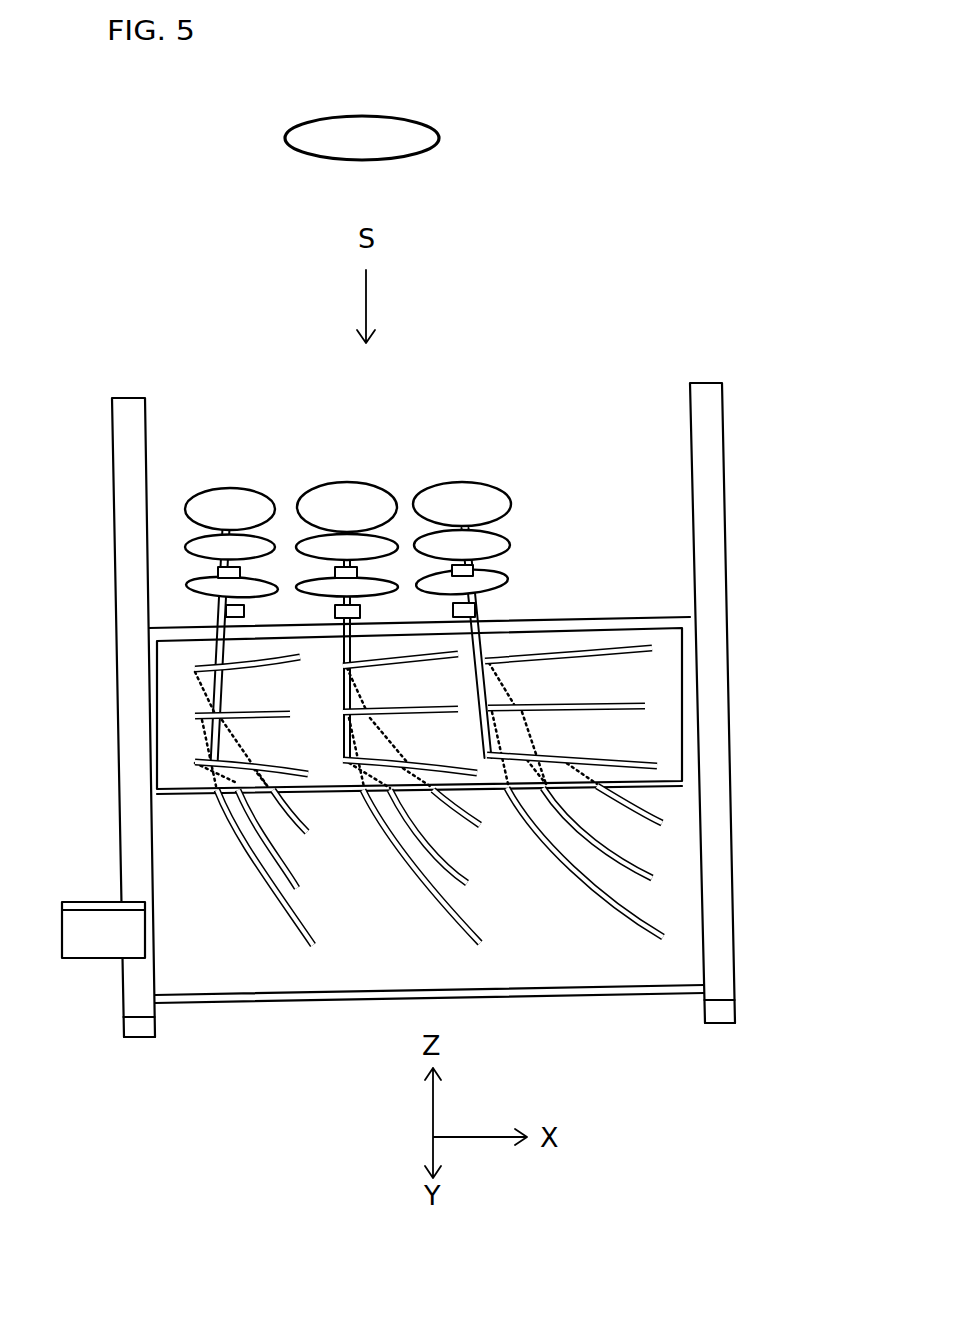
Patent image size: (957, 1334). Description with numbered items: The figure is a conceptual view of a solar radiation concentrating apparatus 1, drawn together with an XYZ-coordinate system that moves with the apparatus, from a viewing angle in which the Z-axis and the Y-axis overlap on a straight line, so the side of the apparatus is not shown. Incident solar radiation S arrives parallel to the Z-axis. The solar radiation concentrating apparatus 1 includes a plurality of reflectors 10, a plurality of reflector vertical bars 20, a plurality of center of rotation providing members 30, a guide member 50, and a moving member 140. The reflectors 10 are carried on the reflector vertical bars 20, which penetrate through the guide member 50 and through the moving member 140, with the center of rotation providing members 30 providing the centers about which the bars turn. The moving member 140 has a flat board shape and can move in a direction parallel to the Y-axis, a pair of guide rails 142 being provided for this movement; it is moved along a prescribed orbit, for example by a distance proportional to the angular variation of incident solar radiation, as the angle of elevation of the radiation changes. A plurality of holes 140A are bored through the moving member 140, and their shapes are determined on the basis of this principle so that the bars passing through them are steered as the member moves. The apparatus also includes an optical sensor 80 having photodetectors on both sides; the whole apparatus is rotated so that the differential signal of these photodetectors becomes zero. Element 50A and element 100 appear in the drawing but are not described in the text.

The solar radiation concentrating apparatus 1 is at (525, 447).
The reflector 10 is at (231, 480).
The reflector vertical bar 20 is at (208, 596).
The center of rotation providing member 30 is at (480, 608).
The guide member 50 is at (490, 701).
The rod 50A is at (663, 652).
The optical sensor 80 is at (62, 893).
The sheet sample 100 is at (272, 138).
The moving member 140 is at (213, 1010).
The hole 140A is at (310, 963).
The guide rail 142 is at (140, 1047).